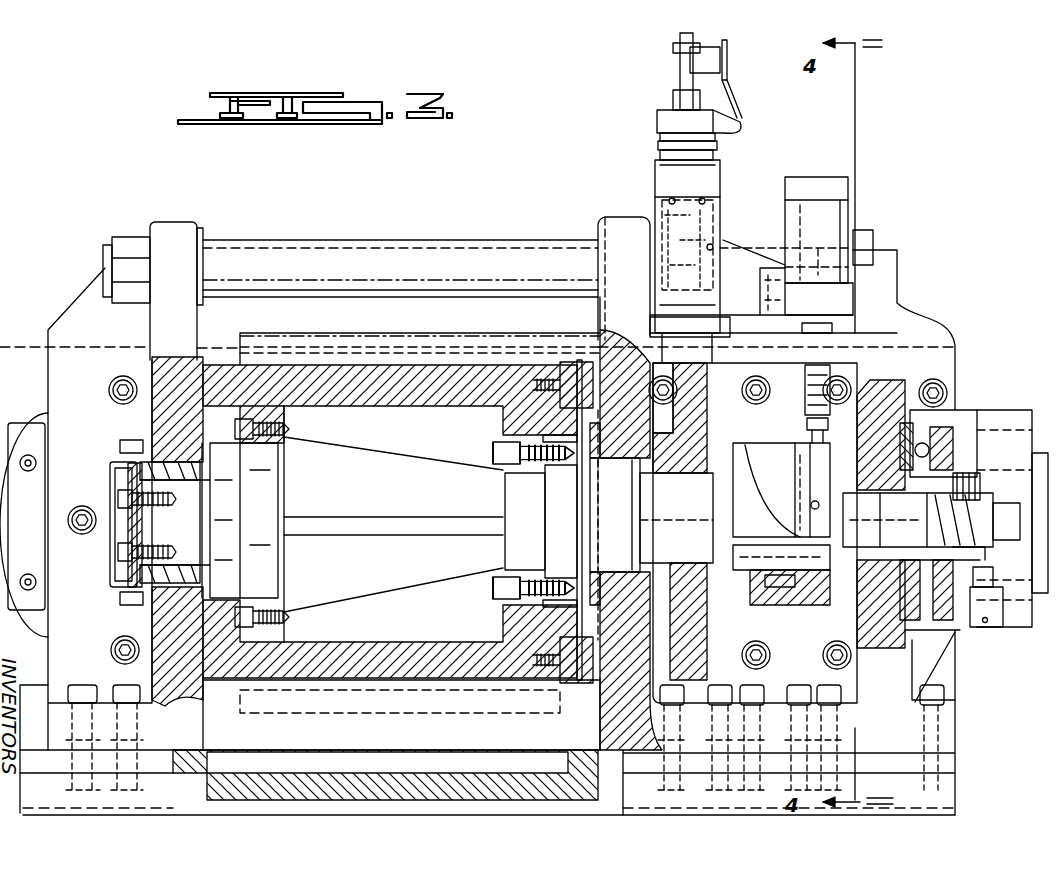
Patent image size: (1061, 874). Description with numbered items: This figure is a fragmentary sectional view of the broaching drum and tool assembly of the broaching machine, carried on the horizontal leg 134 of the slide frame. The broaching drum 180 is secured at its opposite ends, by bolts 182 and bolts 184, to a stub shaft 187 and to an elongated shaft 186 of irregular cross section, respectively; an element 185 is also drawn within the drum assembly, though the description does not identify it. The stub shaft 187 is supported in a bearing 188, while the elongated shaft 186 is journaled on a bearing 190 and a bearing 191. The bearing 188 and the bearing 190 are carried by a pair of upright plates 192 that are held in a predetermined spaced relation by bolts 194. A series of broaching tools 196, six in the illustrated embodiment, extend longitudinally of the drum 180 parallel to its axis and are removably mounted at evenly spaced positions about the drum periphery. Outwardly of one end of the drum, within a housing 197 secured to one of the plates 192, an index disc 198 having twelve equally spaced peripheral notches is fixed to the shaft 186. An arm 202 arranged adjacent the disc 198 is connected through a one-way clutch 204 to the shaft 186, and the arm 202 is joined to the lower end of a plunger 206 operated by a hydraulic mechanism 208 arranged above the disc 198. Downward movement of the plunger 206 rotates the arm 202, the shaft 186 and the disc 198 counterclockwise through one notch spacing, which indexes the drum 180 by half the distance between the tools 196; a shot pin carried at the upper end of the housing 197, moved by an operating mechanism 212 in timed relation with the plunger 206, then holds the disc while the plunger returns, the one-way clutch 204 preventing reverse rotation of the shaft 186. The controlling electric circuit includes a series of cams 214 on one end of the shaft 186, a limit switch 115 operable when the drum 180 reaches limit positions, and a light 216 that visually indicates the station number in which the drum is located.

The switch 115 is at (993, 580).
The horizontal leg 134 is at (507, 733).
The broaching drum 180 is at (375, 396).
The bolts 182 is at (290, 430).
The bolts 184 is at (515, 480).
The conical member 185 is at (417, 450).
The elongated shaft 186 is at (517, 517).
The stub shaft 187 is at (265, 497).
The bearing 188 is at (197, 533).
The bearing 190 is at (620, 460).
The bearing 191 is at (890, 533).
The upright plates 192 is at (178, 222).
The bolts 194 is at (108, 262).
The broaching tools 196 is at (382, 326).
The housing 197 is at (877, 667).
The index disc 198 is at (695, 627).
The arm 202 is at (797, 497).
The one-way clutch 204 is at (773, 600).
The plunger 206 is at (800, 400).
The hydraulic mechanism 208 is at (840, 193).
The operating mechanism 212 is at (703, 180).
The cams 214 is at (960, 475).
The light 216 is at (943, 443).